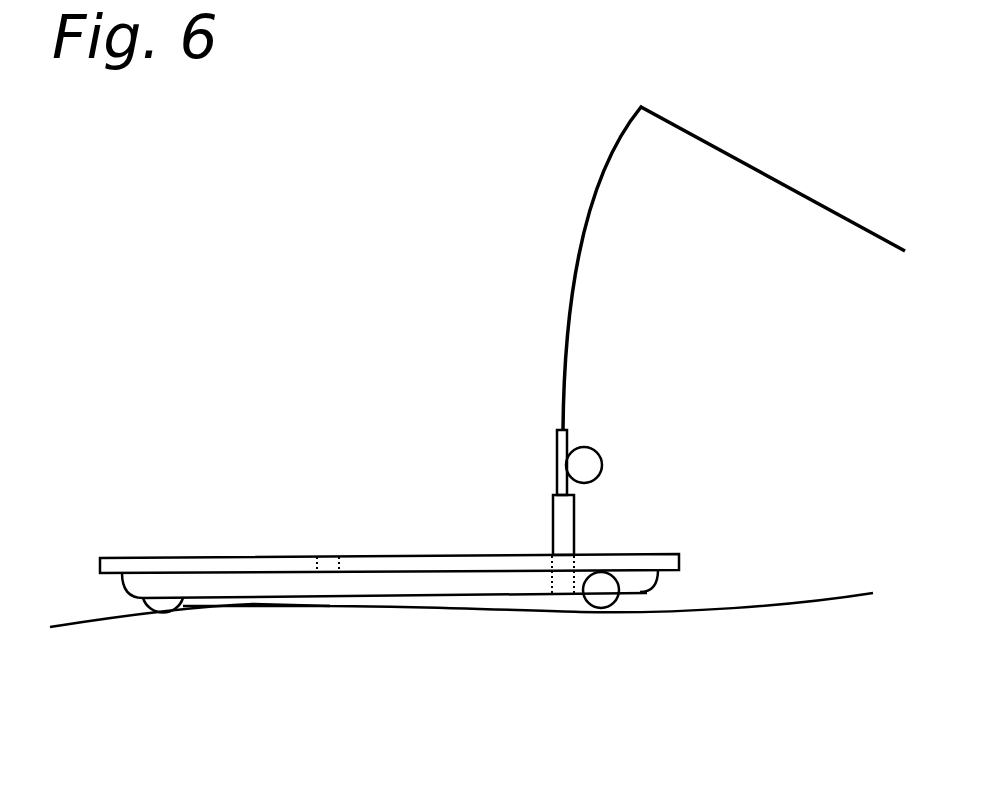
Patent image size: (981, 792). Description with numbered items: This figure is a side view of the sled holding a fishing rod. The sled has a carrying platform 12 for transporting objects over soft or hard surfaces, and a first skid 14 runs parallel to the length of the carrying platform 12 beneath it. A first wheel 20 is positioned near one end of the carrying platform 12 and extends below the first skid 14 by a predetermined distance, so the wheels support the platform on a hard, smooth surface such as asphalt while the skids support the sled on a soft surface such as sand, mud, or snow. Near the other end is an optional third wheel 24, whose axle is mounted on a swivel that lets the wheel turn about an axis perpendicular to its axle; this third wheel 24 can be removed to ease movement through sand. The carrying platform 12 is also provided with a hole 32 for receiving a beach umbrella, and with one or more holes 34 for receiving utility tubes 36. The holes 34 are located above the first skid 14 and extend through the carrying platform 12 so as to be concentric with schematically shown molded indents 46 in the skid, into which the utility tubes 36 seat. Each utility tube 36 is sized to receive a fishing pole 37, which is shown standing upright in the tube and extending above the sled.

The carrying platform 12 is at (165, 568).
The first skid 14 is at (287, 585).
The first wheel 20 is at (602, 593).
The third wheel 24 is at (163, 605).
The hole 32 is at (325, 563).
The holes 34 is at (570, 562).
The utility tubes 36 is at (560, 527).
The fishing pole 37 is at (582, 245).
The molded indents 46 is at (552, 583).